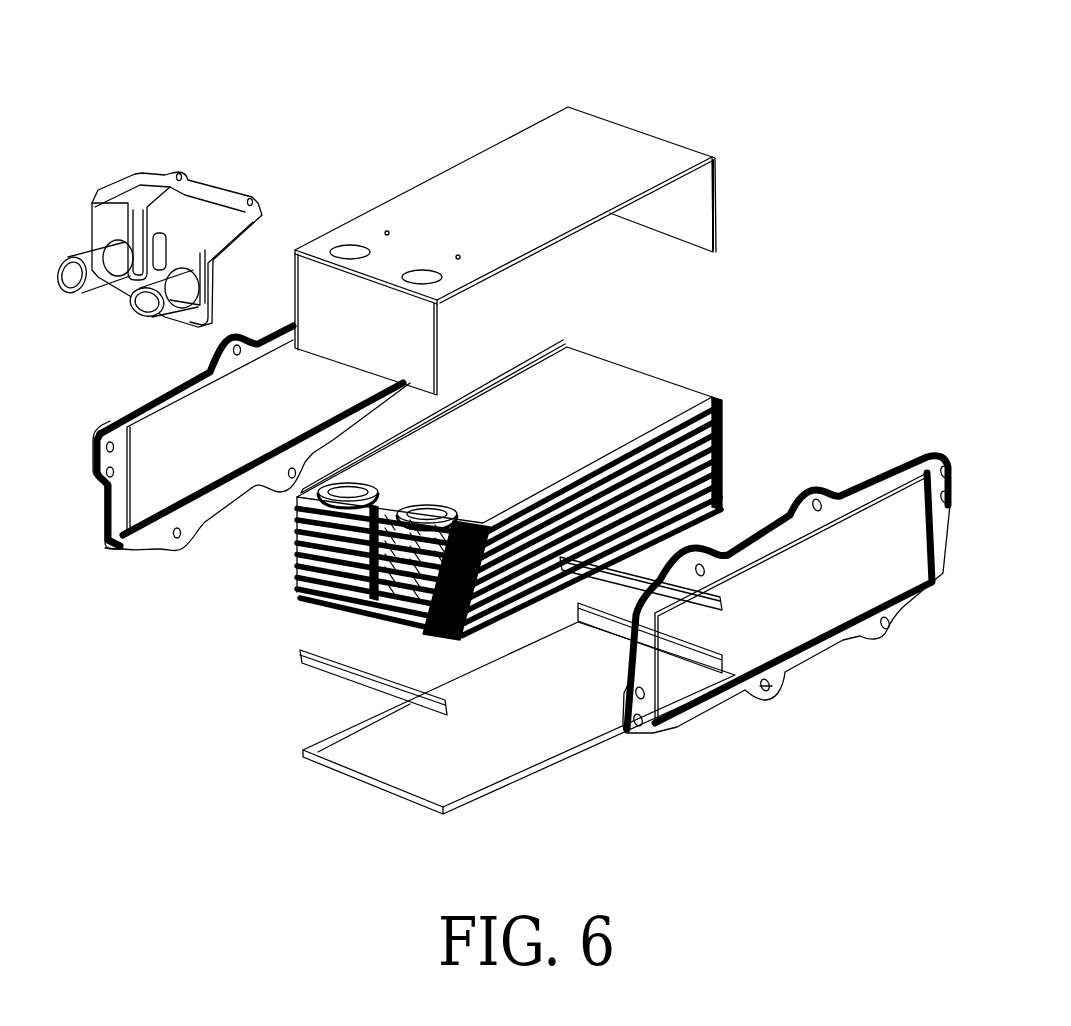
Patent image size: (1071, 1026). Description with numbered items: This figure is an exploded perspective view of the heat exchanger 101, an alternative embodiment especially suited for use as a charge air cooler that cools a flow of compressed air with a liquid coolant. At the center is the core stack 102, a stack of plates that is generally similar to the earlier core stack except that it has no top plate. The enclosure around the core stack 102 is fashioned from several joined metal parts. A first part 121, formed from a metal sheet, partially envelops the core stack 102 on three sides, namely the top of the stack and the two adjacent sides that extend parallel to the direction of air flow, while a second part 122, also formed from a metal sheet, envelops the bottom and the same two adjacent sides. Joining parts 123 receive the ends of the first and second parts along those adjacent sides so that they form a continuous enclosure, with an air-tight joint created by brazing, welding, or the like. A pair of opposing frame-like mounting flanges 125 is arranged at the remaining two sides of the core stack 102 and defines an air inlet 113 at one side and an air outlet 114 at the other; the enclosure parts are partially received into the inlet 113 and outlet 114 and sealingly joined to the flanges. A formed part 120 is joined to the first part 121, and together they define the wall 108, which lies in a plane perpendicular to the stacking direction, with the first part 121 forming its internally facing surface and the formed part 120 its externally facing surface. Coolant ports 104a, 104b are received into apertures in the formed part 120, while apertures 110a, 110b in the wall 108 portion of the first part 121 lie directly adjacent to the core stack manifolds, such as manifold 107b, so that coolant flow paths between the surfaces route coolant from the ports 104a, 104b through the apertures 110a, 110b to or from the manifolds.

The heat exchanger 101 is at (688, 90).
The core stack 102 is at (568, 492).
The coolant port 104a is at (72, 290).
The coolant port 104b is at (130, 312).
The manifold 107b is at (357, 490).
The wall 108 is at (505, 214).
The aperture 110a is at (345, 250).
The aperture 110b is at (428, 272).
The air inlet 113 is at (815, 597).
The air outlet 114 is at (178, 470).
The formed part 120 is at (196, 187).
The first part 121 is at (716, 198).
The second part 122 is at (517, 783).
The joining parts 123 is at (312, 667).
The mounting flanges 125 is at (123, 548).